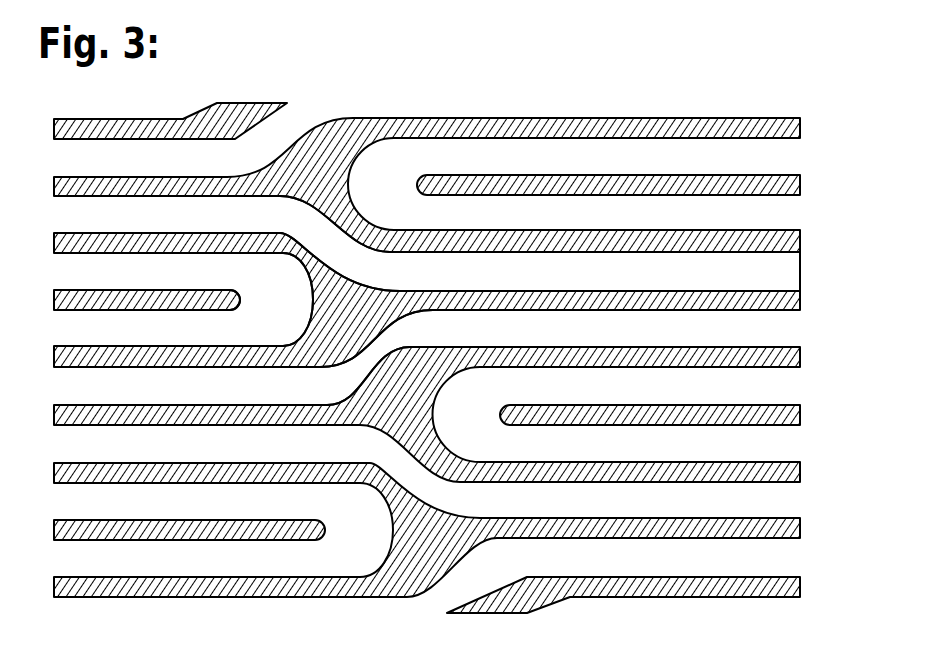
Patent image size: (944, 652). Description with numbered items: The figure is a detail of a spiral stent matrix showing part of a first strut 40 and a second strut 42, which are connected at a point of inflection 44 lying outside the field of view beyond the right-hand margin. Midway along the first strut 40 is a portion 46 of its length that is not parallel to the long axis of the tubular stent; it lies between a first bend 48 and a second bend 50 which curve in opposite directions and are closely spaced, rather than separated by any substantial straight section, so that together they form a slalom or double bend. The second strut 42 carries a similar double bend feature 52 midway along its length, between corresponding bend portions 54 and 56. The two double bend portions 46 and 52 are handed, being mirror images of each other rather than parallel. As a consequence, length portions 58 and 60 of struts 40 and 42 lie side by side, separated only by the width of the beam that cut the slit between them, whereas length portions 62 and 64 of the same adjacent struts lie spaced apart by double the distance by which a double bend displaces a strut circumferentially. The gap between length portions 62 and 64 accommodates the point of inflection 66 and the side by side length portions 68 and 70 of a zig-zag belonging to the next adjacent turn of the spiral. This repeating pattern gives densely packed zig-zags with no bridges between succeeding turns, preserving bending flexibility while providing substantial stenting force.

The first strut 40 is at (208, 227).
The second strut 42 is at (216, 401).
The point of inflection 44 is at (820, 255).
The portion of the length of strut not parallel to the long axis 46 is at (351, 256).
The first bend 48 is at (291, 227).
The second bend 50 is at (403, 281).
The double bend feature 52 is at (383, 367).
The bend portion 54 is at (328, 399).
The bend portion 56 is at (438, 342).
The length portion of strut 58 is at (648, 284).
The length portion of strut 60 is at (648, 342).
The length portion of strut 62 is at (128, 227).
The length portion of strut 64 is at (131, 401).
The point of inflection 66 is at (295, 312).
The side by side length portion 68 is at (175, 286).
The side by side length portion 70 is at (175, 344).